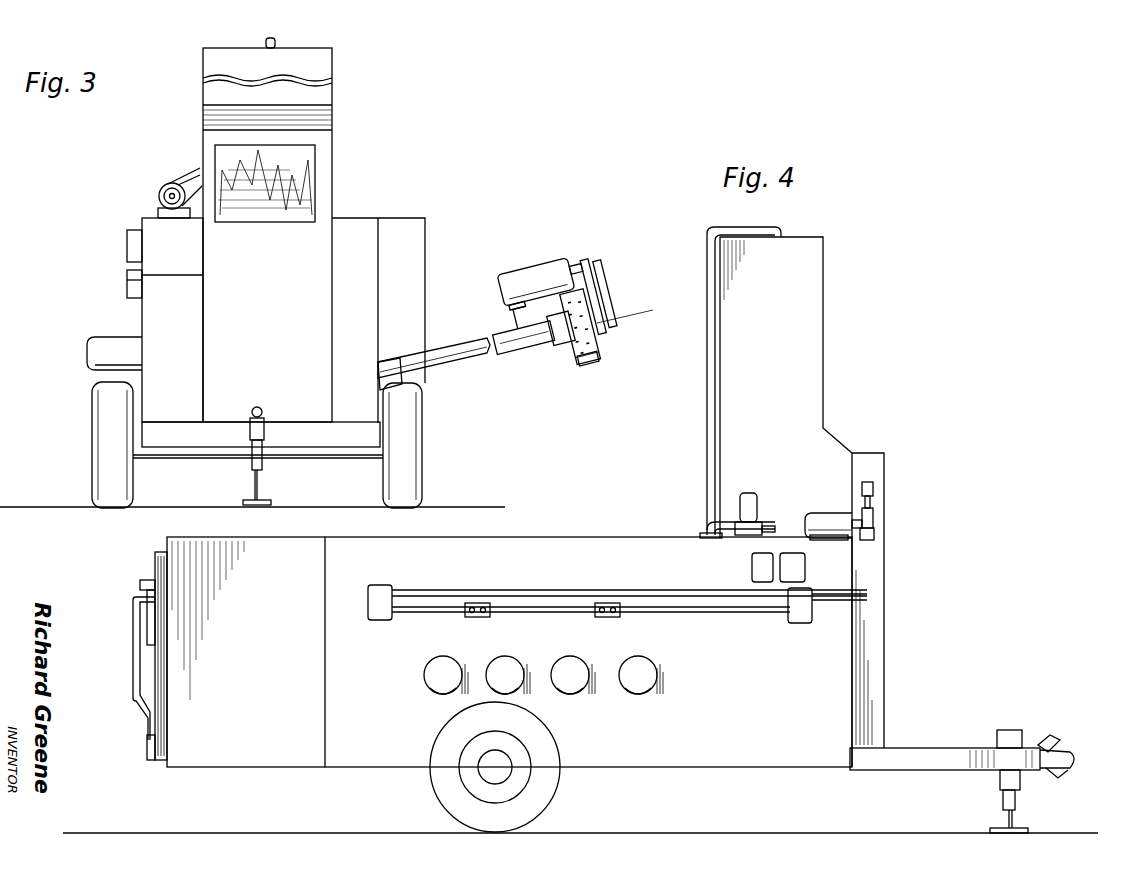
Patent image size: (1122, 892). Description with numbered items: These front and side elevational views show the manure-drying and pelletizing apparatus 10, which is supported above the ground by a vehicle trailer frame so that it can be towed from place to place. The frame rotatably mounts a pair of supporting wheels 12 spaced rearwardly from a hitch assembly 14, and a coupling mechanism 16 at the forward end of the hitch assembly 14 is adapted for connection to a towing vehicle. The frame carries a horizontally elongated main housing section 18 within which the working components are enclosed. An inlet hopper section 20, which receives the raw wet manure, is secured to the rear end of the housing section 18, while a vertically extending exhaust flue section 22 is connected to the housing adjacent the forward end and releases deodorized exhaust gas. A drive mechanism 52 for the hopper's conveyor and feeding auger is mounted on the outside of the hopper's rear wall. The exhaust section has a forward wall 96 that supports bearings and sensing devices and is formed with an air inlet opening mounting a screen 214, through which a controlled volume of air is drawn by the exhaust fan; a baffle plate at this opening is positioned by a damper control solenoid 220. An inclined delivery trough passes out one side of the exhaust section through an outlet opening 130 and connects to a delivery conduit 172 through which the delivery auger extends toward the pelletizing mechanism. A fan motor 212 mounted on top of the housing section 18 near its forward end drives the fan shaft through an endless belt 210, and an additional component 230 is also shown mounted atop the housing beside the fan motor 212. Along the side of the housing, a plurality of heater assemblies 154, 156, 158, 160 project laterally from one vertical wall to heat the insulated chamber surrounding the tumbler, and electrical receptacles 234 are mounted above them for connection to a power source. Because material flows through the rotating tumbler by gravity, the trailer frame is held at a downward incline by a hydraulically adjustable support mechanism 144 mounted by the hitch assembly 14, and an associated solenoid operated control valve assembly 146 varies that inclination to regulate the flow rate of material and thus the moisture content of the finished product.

In FIG. 3, the apparatus 10 is at (378, 180).
In FIG. 4, the apparatus 10 is at (871, 322).
In FIG. 3, the supporting wheels 12 is at (115, 450).
In FIG. 4, the supporting wheels 12 is at (530, 793).
In FIG. 4, the hitch assembly 14 is at (896, 760).
In FIG. 3, the coupling mechanism 16 is at (269, 424).
In FIG. 4, the coupling mechanism 16 is at (1056, 744).
In FIG. 3, the main housing section 18 is at (356, 232).
In FIG. 4, the main housing section 18 is at (535, 554).
In FIG. 4, the inlet hopper section 20 is at (261, 742).
In FIG. 3, the exhaust flue section 22 is at (337, 162).
In FIG. 4, the exhaust flue section 22 is at (804, 353).
In FIG. 4, the drive mechanism 52 is at (134, 600).
In FIG. 3, the forward wall 96 is at (217, 309).
In FIG. 3, the outlet opening 130 is at (378, 372).
In FIG. 3, the hydraulically adjustable support mechanism 144 is at (266, 489).
In FIG. 4, the hydraulically adjustable support mechanism 144 is at (1024, 808).
In FIG. 4, the solenoid operated control valve assembly 146 is at (1004, 730).
In FIG. 4, the heater assembly 154 is at (437, 664).
In FIG. 4, the heater assembly 156 is at (500, 662).
In FIG. 4, the heater assembly 158 is at (574, 663).
In FIG. 3, the heater assembly 160 is at (95, 352).
In FIG. 4, the heater assembly 160 is at (637, 662).
In FIG. 3, the delivery conduit 172 is at (461, 355).
In FIG. 4, the endless belt 210 is at (874, 502).
In FIG. 3, the fan motor 212 is at (159, 196).
In FIG. 4, the fan motor 212 is at (816, 514).
In FIG. 3, the screen 214 is at (234, 163).
In FIG. 4, the damper control solenoid 220 is at (712, 420).
In FIG. 4, the valve 230 is at (743, 507).
In FIG. 4, the receptacles 234 is at (484, 603).